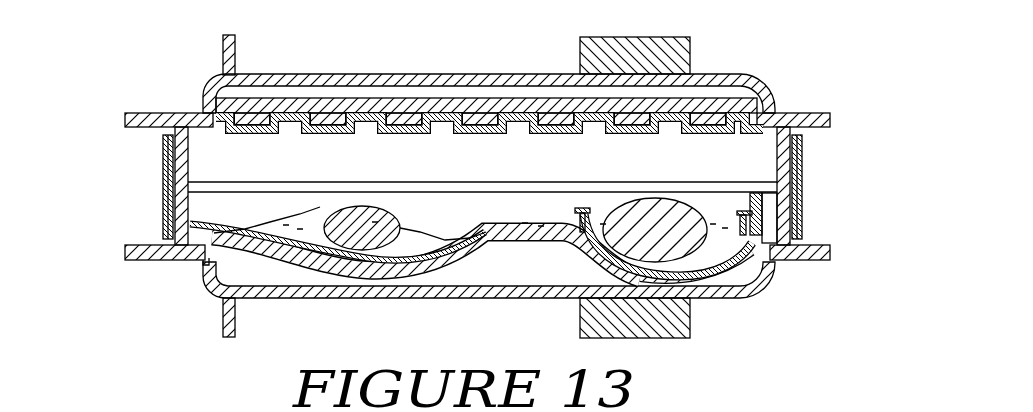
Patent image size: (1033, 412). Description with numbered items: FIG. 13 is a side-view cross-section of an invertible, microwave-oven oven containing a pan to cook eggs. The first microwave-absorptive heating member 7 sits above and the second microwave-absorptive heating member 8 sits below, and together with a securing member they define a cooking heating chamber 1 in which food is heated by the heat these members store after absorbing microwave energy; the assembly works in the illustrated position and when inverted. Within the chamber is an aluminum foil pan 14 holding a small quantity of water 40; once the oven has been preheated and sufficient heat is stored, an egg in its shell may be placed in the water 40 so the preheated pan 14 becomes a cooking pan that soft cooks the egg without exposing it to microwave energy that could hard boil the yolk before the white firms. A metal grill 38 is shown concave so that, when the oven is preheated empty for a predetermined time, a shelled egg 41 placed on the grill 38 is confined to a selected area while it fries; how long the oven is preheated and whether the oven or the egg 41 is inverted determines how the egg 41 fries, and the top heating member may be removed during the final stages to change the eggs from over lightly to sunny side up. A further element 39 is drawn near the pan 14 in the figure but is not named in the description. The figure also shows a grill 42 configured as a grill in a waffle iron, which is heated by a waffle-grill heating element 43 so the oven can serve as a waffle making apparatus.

The cooking heating chamber 1 is at (708, 153).
The first microwave-absorptive heating member 7 is at (768, 78).
The second microwave-absorptive heating member 8 is at (770, 302).
The aluminum foil pan 14 is at (585, 210).
The metal grill 38 is at (355, 250).
The ball element 39 is at (667, 213).
The water 40 is at (763, 222).
The egg 41 is at (315, 203).
The grill 42 is at (245, 118).
The waffle-grill heating element 43 is at (342, 107).